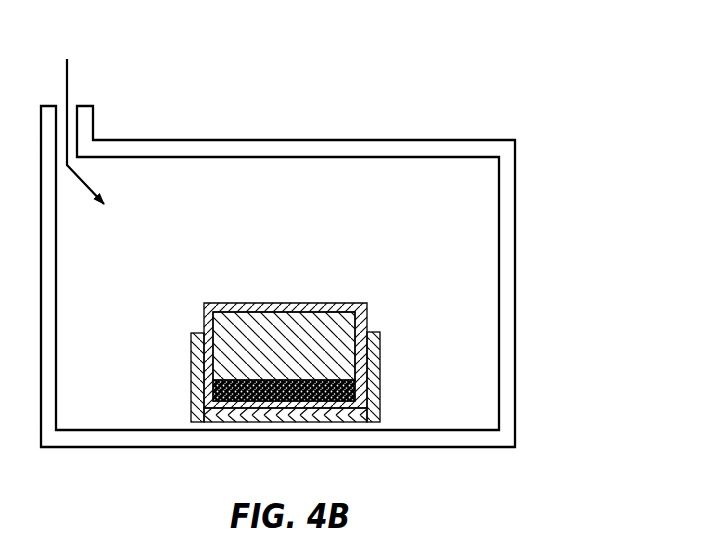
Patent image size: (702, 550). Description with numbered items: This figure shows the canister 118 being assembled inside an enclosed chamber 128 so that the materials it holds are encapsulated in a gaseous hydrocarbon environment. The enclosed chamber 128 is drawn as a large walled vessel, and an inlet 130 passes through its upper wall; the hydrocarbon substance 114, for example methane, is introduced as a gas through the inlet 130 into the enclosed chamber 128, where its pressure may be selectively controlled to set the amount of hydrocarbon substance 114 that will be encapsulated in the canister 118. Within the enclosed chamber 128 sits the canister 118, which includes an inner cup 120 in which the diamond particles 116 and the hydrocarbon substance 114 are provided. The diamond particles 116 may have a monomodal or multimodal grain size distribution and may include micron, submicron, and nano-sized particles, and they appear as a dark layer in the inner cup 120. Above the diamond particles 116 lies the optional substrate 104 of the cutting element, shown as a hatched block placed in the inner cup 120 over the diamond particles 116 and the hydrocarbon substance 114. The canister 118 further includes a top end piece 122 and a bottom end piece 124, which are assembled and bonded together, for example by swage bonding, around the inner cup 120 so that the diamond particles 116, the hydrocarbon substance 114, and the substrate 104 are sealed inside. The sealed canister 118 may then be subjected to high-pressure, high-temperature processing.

The substrate 104 is at (280, 336).
The hydrocarbon substance 114 is at (291, 192).
The diamond particles 116 is at (238, 402).
The canister 118 is at (192, 300).
The inner cup 120 is at (361, 360).
The top end piece 122 is at (364, 315).
The bottom end piece 124 is at (372, 415).
The enclosed chamber 128 is at (505, 259).
The inlet 130 is at (84, 94).